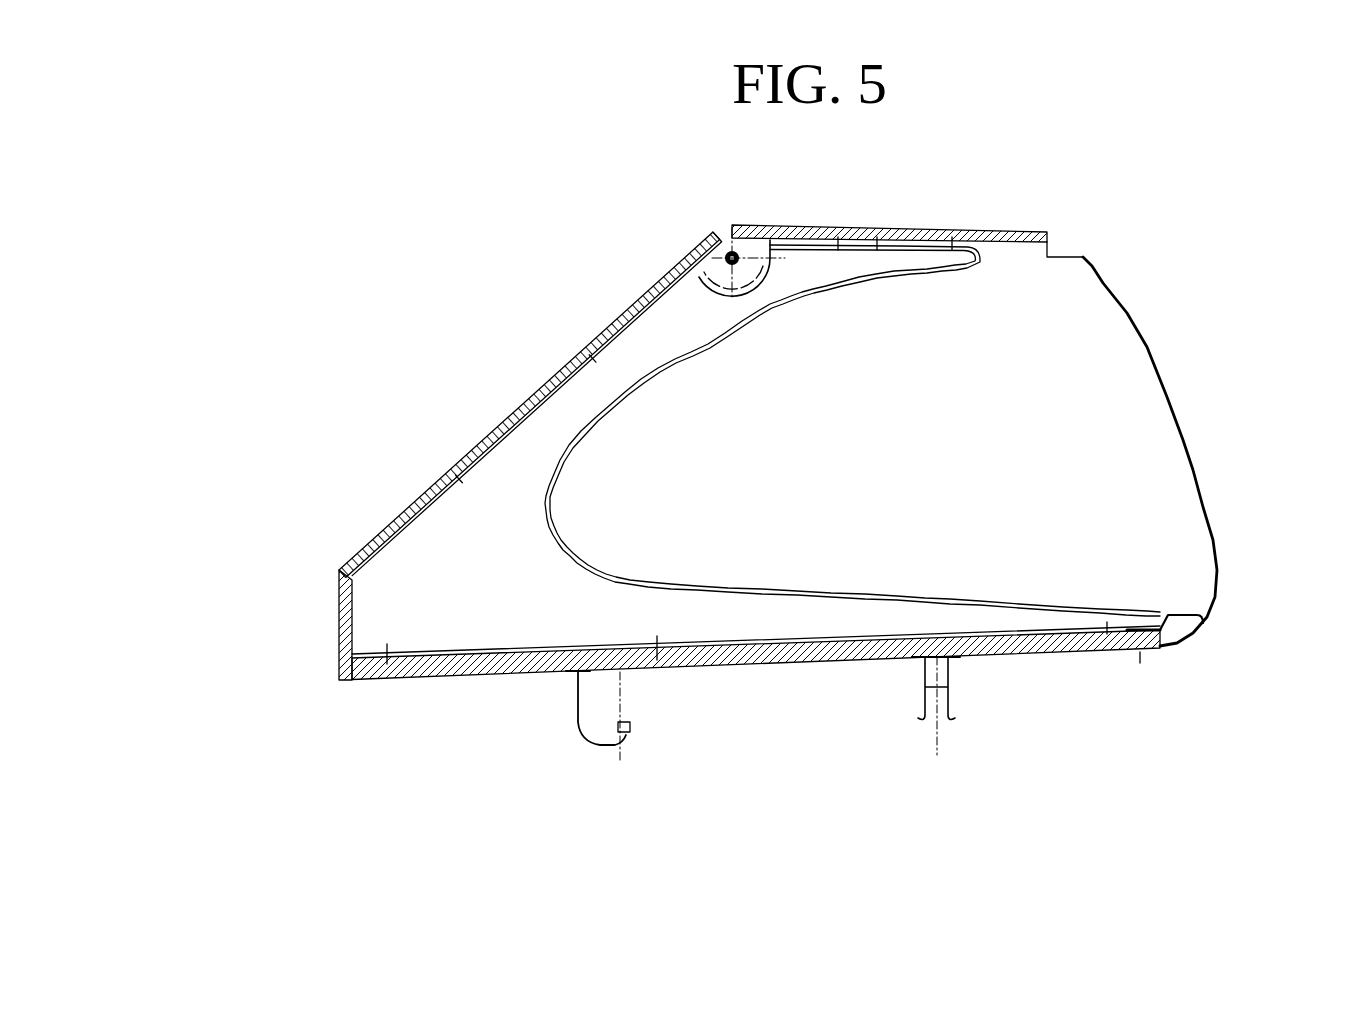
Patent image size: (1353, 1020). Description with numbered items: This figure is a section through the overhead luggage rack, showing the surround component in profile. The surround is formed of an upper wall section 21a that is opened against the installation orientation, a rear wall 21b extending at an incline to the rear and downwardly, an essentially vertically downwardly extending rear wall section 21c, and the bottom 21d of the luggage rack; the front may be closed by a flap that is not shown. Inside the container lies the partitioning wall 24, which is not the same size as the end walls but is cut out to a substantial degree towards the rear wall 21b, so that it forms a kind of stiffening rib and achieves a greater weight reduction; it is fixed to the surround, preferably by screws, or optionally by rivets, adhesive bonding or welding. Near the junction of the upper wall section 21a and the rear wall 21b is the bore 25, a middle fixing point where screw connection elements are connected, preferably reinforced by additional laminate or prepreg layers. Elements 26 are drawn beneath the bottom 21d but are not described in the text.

The wall section 21a is at (1012, 234).
The rear wall 21b is at (472, 447).
The rear wall section 21c is at (340, 627).
The bottom 21d is at (762, 662).
The partitioning wall 24 is at (660, 372).
The bore 25 is at (732, 258).
The mounting hook 26 is at (578, 723).